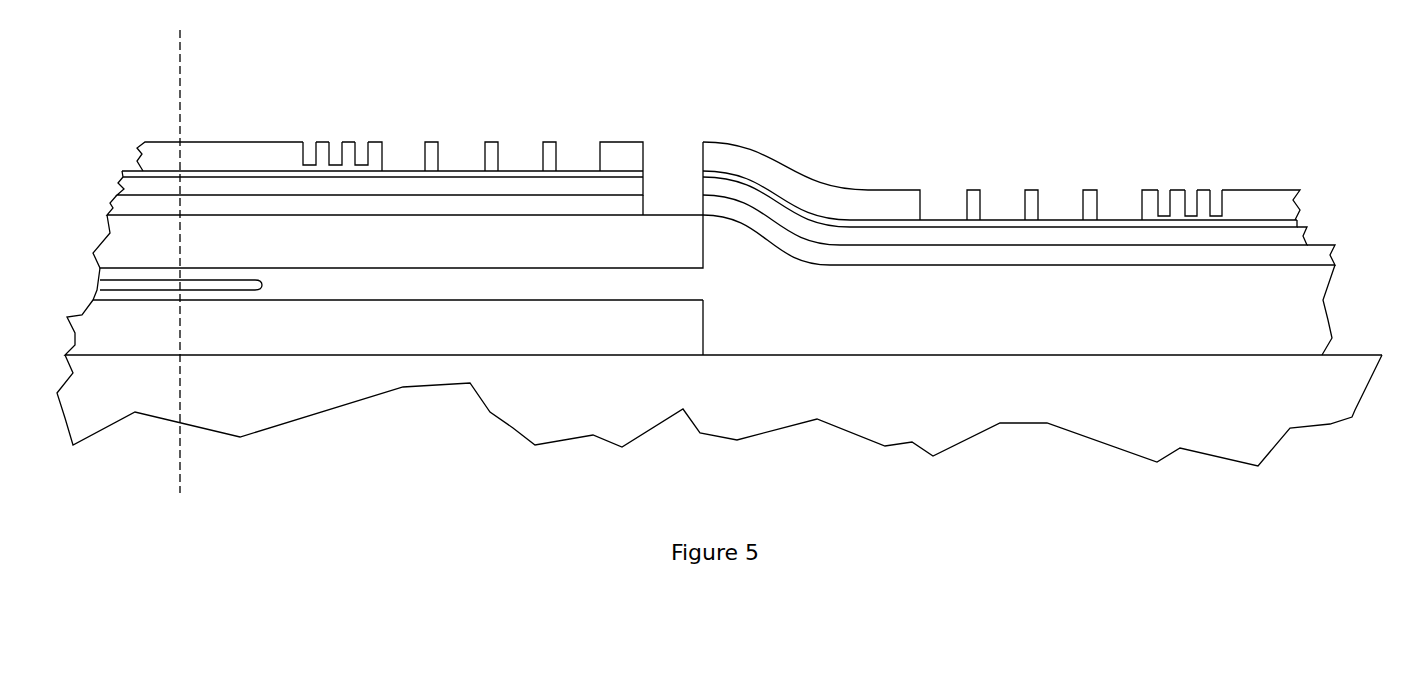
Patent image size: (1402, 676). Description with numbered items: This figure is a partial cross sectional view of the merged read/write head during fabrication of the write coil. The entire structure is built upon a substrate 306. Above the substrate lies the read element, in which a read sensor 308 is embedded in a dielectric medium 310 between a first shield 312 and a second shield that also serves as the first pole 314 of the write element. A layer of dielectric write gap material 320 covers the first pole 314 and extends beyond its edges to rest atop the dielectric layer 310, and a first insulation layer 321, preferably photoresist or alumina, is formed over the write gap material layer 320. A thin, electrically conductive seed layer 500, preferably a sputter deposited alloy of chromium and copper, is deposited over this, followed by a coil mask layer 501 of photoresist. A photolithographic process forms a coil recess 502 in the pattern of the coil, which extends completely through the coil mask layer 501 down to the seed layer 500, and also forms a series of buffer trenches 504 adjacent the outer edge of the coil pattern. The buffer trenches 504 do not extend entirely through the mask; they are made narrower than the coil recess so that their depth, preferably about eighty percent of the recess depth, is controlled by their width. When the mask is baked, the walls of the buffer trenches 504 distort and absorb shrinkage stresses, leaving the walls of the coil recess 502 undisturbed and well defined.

The substrate 306 is at (320, 400).
The read sensor 308 is at (262, 281).
The dielectric medium 310 is at (555, 286).
The first shield 312 is at (395, 331).
The first pole 314 is at (410, 243).
The write gap material layer 320 is at (525, 205).
The first insulation layer 321 is at (217, 190).
The seed layer 500 is at (187, 178).
The coil mask layer 501 is at (228, 163).
The coil recess 502 is at (577, 168).
The buffer trenches 504 is at (360, 163).